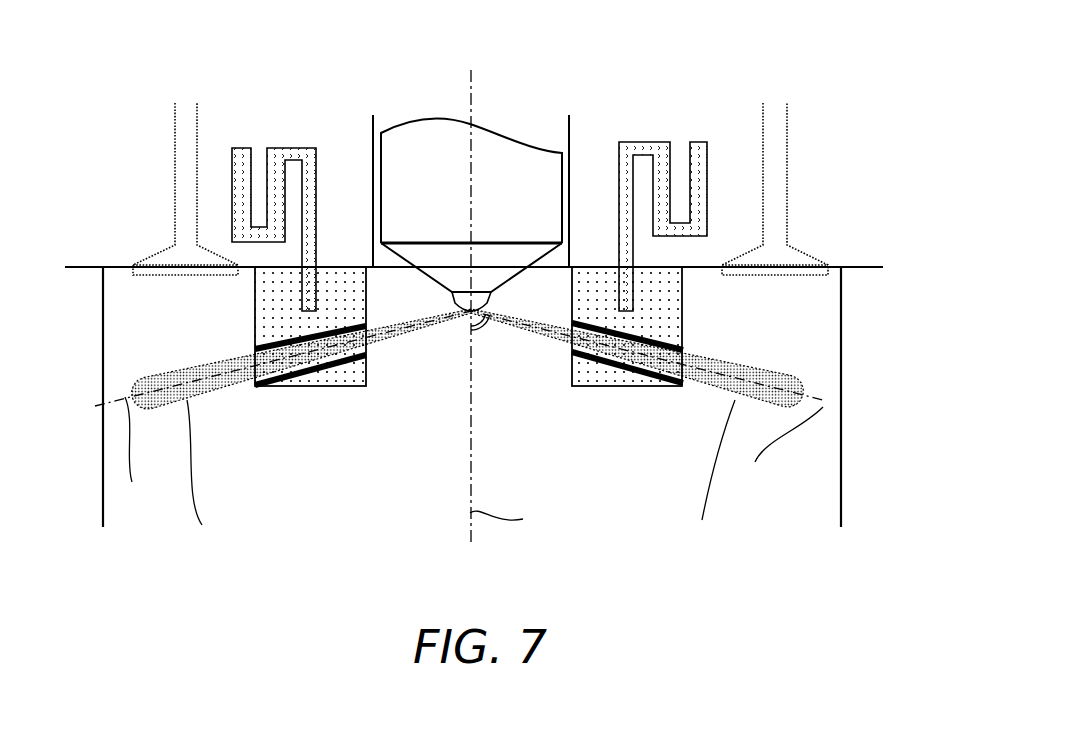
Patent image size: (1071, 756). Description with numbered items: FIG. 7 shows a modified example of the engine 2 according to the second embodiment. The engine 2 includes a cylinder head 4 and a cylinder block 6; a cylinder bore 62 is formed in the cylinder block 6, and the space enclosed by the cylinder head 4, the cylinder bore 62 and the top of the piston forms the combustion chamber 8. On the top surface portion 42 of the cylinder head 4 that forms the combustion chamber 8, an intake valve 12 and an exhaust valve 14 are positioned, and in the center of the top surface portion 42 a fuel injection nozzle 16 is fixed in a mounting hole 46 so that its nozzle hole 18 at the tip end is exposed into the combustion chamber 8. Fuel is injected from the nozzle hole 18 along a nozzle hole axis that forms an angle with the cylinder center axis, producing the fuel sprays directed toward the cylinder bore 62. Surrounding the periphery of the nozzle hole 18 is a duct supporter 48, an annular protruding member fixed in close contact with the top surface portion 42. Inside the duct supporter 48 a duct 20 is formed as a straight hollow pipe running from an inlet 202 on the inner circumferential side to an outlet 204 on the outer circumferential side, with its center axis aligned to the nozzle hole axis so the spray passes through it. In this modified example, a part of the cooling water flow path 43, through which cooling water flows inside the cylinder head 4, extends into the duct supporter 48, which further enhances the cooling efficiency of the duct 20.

The engine 2 is at (683, 65).
The cylinder head 4 is at (850, 228).
The cylinder block 6 is at (858, 388).
The combustion chamber 8 is at (797, 470).
The intake valve 12 is at (187, 155).
The exhaust valve 14 is at (777, 175).
The fuel injection nozzle 16 is at (498, 158).
The nozzle hole 18 is at (467, 300).
The duct 20 is at (313, 370).
The top surface portion 42 is at (715, 267).
The cooling water flow path 43 is at (242, 148).
The mounting hole 46 is at (569, 182).
The duct supporter 48 is at (330, 288).
The cylinder bore 62 is at (103, 333).
The inlet 202 is at (366, 340).
The outlet 204 is at (253, 370).